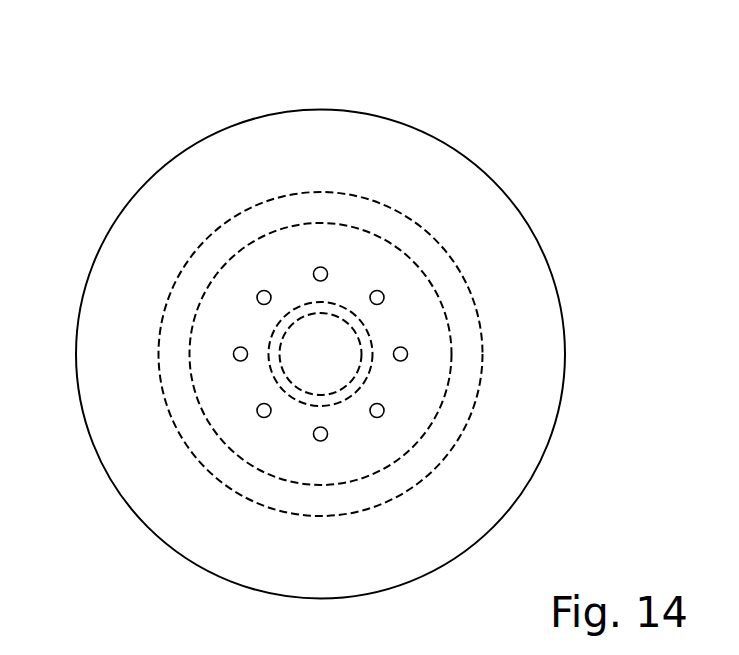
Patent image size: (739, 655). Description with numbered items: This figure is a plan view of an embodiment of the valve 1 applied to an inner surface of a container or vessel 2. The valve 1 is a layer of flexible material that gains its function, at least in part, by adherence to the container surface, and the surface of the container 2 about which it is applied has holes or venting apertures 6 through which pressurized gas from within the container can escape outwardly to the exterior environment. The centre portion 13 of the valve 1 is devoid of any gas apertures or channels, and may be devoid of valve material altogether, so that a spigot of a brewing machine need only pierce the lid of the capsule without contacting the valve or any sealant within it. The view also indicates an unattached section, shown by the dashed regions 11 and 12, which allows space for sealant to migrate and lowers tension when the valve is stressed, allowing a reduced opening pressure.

The valve 1 is at (210, 233).
The container or vessel 2 is at (375, 115).
The venting aperture 6 is at (384, 300).
The surface regions 11 is at (270, 345).
The inner ring 12 is at (280, 445).
The centre portion 13 is at (320, 342).